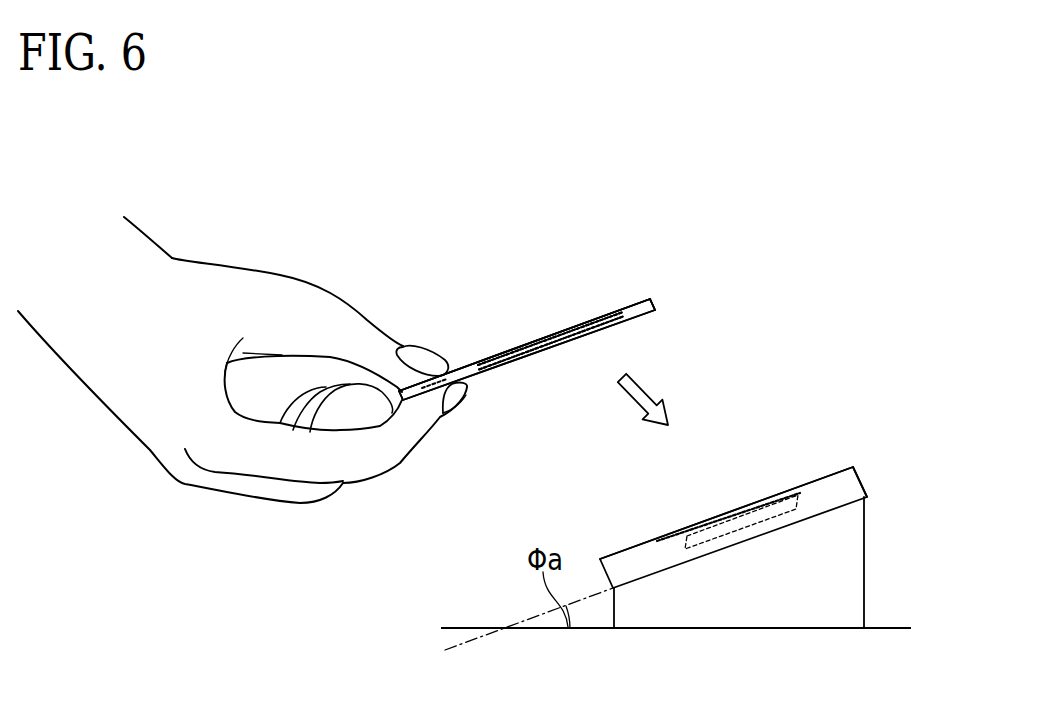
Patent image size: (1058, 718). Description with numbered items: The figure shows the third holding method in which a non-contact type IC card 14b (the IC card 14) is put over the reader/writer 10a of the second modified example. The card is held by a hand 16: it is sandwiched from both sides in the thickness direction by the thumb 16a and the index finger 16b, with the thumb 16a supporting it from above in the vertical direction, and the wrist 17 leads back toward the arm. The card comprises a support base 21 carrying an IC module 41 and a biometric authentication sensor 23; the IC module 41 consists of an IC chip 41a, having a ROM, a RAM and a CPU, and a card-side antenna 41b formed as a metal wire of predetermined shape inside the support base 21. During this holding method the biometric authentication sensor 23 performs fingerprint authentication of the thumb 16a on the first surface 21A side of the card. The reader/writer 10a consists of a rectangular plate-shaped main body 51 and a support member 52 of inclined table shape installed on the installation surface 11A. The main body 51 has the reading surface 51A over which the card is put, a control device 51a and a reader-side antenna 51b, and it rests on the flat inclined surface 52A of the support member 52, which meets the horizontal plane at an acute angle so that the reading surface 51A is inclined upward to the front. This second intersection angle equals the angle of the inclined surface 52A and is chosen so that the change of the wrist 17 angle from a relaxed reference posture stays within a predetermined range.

The reader/writer 10a is at (872, 332).
The installation surface 11A is at (462, 627).
The IC card 14 is at (527, 349).
The non-contact type IC card 14b is at (653, 297).
The hand 16 is at (317, 278).
The thumb 16a is at (418, 350).
The index finger 16b is at (458, 400).
The wrist 17 is at (172, 257).
The support base 21 is at (640, 300).
The first surface 21A is at (607, 313).
The biometric authentication sensor 23 is at (440, 353).
The IC module 41 is at (610, 190).
The IC chip 41a is at (548, 333).
The antenna 41b is at (497, 353).
The main body 51 is at (648, 560).
The reading surface 51A is at (707, 520).
The control device 51a is at (735, 517).
The antenna 51b is at (782, 507).
The support member 52 is at (840, 543).
The inclined surface 52A is at (815, 517).